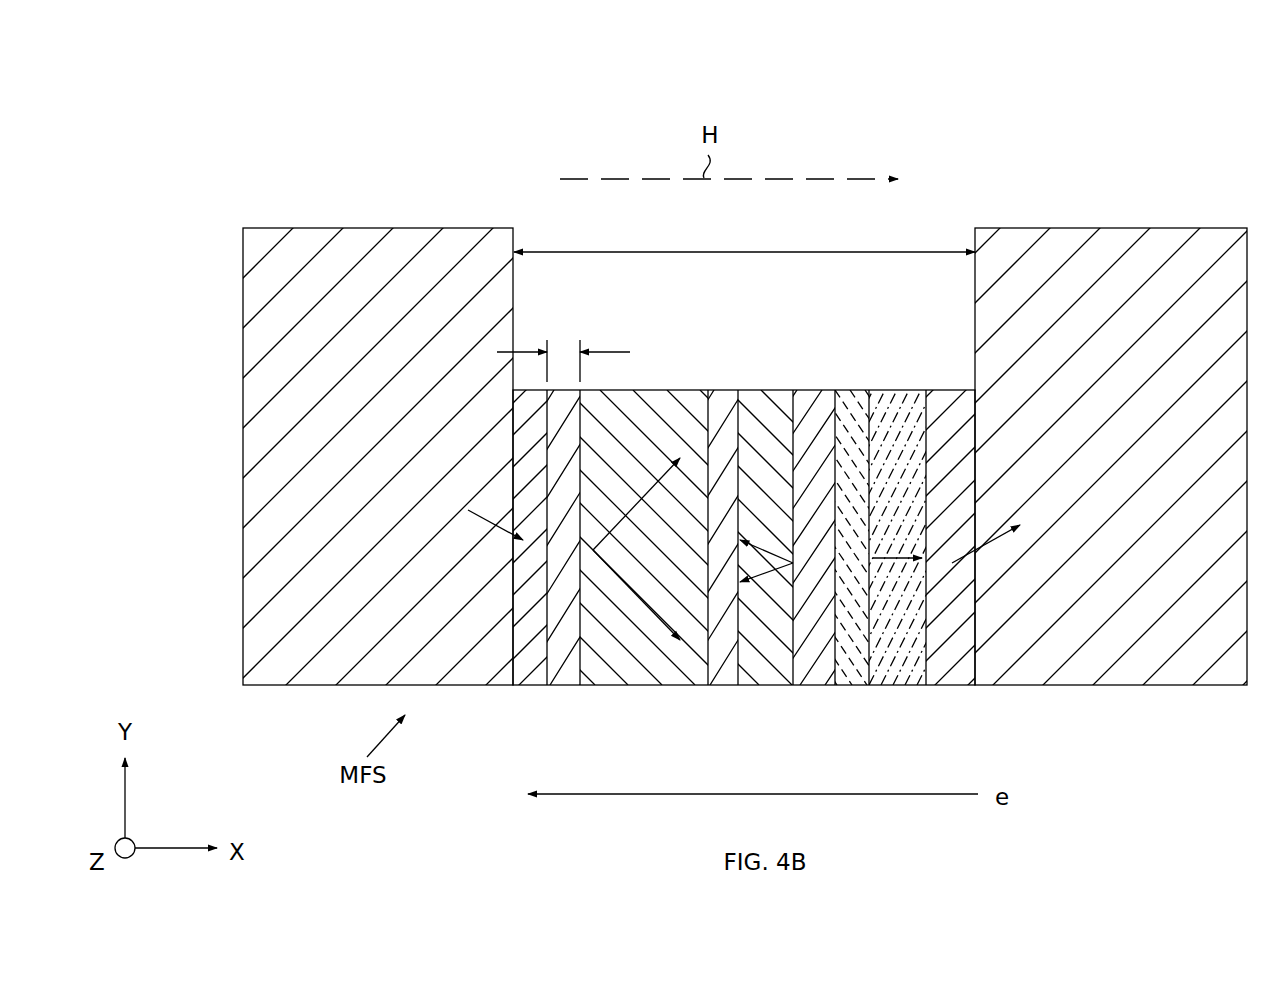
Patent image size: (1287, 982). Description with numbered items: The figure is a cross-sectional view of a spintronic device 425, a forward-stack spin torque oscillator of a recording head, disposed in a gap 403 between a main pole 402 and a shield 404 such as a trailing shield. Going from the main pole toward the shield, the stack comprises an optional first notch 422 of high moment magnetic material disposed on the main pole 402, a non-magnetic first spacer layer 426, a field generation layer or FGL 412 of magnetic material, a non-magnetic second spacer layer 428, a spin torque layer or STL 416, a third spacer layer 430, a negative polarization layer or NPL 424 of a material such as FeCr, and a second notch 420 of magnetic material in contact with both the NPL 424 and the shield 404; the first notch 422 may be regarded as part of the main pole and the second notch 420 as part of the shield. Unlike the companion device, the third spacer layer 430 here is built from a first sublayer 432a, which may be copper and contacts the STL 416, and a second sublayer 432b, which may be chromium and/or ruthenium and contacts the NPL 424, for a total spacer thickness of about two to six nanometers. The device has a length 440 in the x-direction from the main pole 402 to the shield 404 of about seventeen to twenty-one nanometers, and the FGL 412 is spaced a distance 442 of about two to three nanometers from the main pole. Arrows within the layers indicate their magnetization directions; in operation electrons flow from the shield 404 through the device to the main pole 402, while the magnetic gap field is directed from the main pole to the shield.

The main pole 402 is at (357, 458).
The shield 404 is at (1101, 458).
The gap 403 is at (512, 157).
The spintronic device 425 is at (225, 85).
The FGL 412 is at (683, 565).
The STL 416 is at (747, 650).
The second notch 420 is at (952, 670).
The first notch 422 is at (532, 660).
The negative polarization layer 424 is at (877, 650).
The first spacer layer 426 is at (563, 670).
The second spacer layer 428 is at (725, 670).
The third spacer layer 430 is at (831, 529).
The first sublayer 432a is at (823, 390).
The second sublayer 432b is at (855, 390).
The length 440 is at (746, 250).
The distance 442 is at (563, 350).